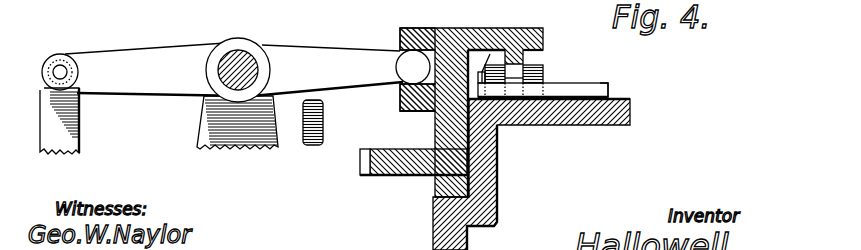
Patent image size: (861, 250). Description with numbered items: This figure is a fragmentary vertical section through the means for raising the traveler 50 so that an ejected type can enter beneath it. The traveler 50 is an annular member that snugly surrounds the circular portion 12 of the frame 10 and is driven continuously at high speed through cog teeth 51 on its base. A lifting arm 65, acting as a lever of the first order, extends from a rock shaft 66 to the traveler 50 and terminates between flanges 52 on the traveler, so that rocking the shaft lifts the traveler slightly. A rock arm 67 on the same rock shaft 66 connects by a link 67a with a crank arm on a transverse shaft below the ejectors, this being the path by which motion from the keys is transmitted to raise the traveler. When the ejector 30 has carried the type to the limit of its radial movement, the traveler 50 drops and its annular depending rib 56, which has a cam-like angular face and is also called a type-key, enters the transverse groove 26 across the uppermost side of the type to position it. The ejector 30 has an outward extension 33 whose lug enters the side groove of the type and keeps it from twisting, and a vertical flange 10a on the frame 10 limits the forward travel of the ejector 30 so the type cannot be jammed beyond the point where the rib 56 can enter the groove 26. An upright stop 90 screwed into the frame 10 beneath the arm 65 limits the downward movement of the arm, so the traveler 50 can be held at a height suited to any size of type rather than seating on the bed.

The frame 10 is at (583, 127).
The vertical flange 10a is at (486, 62).
The circular portion 12 is at (497, 197).
The transverse groove 26 is at (604, 83).
The ejector 30 is at (599, 88).
The outward extension 33 is at (533, 85).
The traveler 50 is at (457, 31).
The cog teeth 51 is at (361, 155).
The flanges 52 is at (401, 33).
The depending rib 56 is at (512, 74).
The lifting arm 65 is at (305, 53).
The rock shaft 66 is at (245, 47).
The rock arm 67 is at (143, 69).
The link 67a is at (80, 143).
The upright stop 90 is at (324, 126).